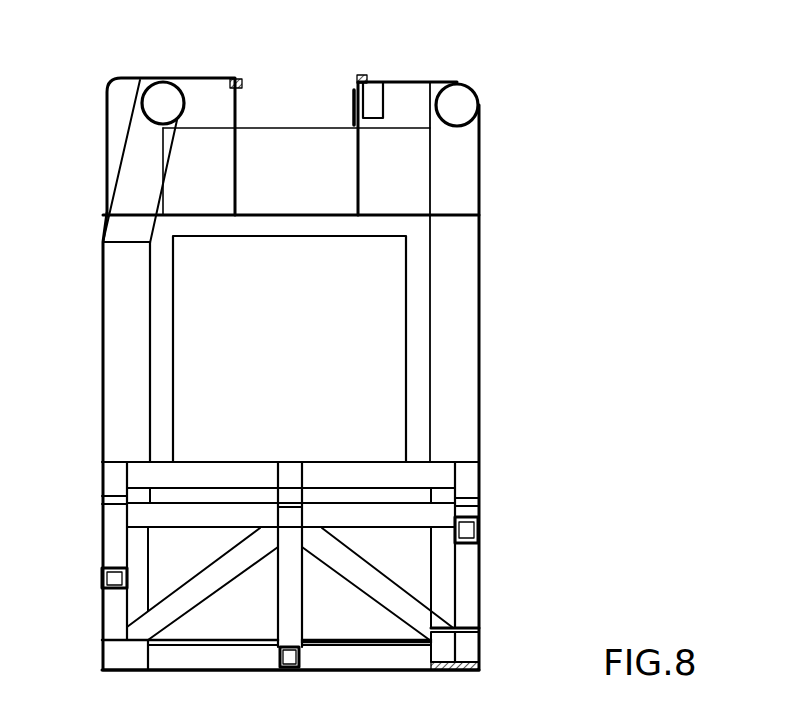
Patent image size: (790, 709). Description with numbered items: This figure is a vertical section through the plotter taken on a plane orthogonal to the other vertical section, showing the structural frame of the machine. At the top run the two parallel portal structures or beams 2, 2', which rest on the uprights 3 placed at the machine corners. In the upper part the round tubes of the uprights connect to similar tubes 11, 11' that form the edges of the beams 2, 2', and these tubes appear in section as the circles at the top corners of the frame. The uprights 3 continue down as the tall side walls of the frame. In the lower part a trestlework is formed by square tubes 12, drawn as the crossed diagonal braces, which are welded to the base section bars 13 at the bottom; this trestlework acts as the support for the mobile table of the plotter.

The beam 2 is at (191, 114).
The beam 2' is at (418, 122).
The upright 3 is at (468, 333).
The tube 11 is at (117, 75).
The tube 11' is at (514, 93).
The square tube 12 is at (228, 565).
The base section bar 13 is at (375, 657).